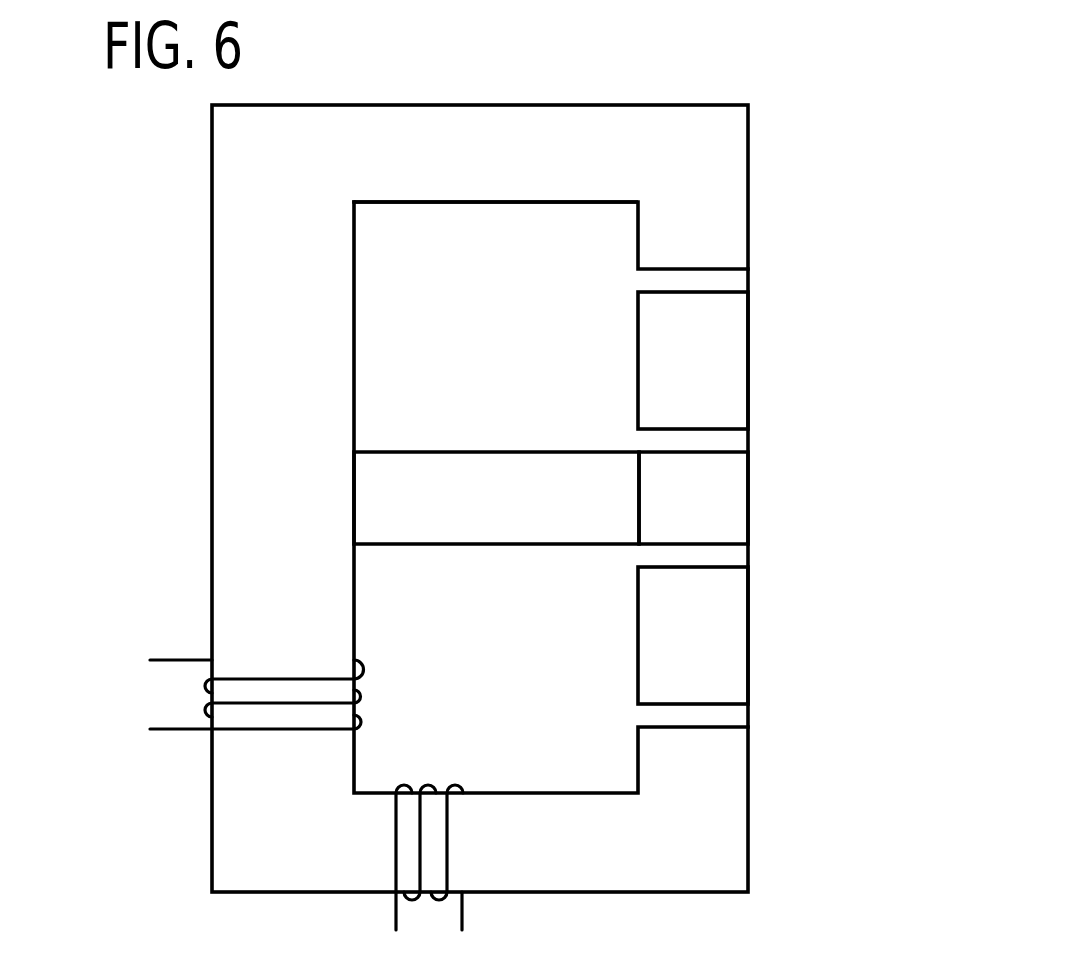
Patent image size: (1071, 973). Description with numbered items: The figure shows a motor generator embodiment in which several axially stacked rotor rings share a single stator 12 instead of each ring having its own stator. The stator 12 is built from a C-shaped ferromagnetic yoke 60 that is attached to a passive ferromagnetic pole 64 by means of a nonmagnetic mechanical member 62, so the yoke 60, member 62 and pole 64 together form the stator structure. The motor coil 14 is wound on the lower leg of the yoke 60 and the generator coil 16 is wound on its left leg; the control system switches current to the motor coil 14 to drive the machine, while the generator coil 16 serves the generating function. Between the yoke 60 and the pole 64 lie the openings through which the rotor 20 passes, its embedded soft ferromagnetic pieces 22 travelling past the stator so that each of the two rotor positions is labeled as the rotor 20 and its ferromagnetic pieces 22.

The stator 12 is at (636, 99).
The motor coil 14 is at (464, 914).
The generator coil 16 is at (183, 731).
The rotor 20 is at (776, 498).
The soft ferromagnetic pieces 22 is at (748, 359).
The C-shaped ferromagnetic yoke 60 is at (505, 166).
The nonmagnetic mechanical member 62 is at (517, 514).
The passive ferromagnetic pole 64 is at (708, 511).